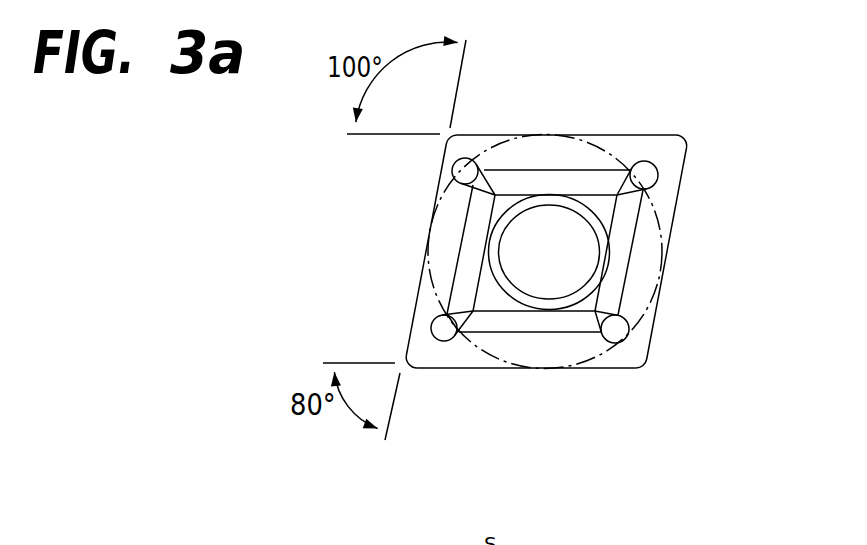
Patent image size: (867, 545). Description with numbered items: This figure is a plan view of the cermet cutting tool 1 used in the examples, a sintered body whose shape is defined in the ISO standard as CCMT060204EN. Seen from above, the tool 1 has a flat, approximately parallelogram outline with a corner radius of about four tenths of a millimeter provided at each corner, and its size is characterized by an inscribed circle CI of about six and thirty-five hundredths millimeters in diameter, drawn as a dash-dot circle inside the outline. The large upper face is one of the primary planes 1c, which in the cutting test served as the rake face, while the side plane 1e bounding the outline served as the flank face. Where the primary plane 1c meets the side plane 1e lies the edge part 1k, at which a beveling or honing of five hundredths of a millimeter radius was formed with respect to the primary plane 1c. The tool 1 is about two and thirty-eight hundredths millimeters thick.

The tool 1 is at (583, 221).
The side plane 1e is at (627, 135).
The primary plane 1c is at (642, 273).
The edge part 1k is at (650, 323).
The inscribed circle CI is at (657, 222).